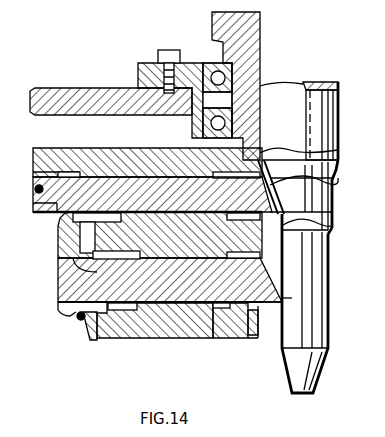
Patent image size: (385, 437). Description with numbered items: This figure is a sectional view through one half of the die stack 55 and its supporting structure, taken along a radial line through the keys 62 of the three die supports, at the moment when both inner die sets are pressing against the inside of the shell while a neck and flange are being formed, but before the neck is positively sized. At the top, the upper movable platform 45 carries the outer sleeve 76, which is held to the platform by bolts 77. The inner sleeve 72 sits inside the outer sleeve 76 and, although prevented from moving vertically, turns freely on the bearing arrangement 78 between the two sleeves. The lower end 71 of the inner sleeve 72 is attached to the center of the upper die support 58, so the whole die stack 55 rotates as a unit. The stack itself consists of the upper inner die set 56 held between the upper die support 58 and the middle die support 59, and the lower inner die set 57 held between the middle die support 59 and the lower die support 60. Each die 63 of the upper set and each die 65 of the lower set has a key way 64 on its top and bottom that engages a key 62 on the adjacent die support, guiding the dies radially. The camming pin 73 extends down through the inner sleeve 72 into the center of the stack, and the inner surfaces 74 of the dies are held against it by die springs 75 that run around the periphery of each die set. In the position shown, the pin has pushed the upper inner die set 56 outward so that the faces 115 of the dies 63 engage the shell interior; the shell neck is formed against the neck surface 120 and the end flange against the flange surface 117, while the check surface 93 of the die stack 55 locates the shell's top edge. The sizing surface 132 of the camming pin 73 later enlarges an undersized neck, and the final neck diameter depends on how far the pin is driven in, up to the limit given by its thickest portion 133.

The upper movable platform 45 is at (78, 88).
The outer sleeve 76 is at (138, 72).
The bolts 77 is at (162, 52).
The bearing arrangement 78 is at (212, 66).
The inner sleeve 72 is at (262, 50).
The thickest portion 133 is at (306, 88).
The camming pin 73 is at (338, 104).
The lower end 71 is at (336, 150).
The sizing surface 132 is at (330, 175).
The dies 63 is at (328, 224).
The inner surfaces 74 is at (290, 284).
The upper die support 58 is at (34, 150).
The die stack 55 is at (34, 173).
The die springs 75 is at (38, 190).
The check surface 93 is at (58, 217).
The upper inner die set 56 is at (52, 222).
The faces 115 is at (62, 235).
The flange surface 117 is at (95, 255).
The neck surface 120 is at (70, 270).
The middle die support 59 is at (58, 298).
The lower inner die set 57 is at (60, 306).
The dies 65 is at (90, 343).
The lower die support 60 is at (168, 327).
The keys 62 is at (213, 312).
The key way 64 is at (266, 307).